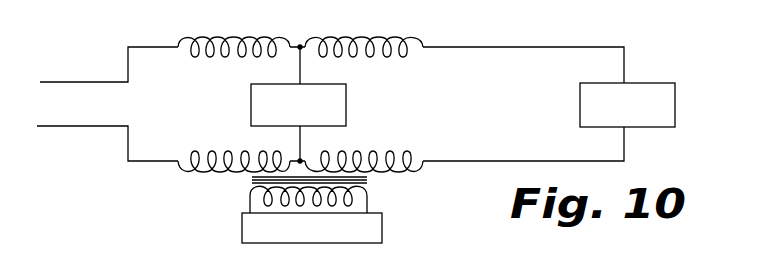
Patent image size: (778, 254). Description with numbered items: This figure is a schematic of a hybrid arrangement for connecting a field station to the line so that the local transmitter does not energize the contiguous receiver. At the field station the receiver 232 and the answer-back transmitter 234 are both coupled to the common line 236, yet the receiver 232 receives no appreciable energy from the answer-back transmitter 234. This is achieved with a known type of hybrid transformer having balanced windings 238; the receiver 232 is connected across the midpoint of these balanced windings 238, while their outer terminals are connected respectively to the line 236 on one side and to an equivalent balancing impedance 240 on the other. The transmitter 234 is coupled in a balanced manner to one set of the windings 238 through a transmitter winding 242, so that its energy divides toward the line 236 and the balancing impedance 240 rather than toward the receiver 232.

The common line 236 is at (107, 104).
The balanced windings 238 is at (269, 22).
The receiver 232 is at (346, 94).
The balancing impedance 240 is at (690, 80).
The transmitter winding 242 is at (367, 197).
The answer-back transmitter 234 is at (382, 216).